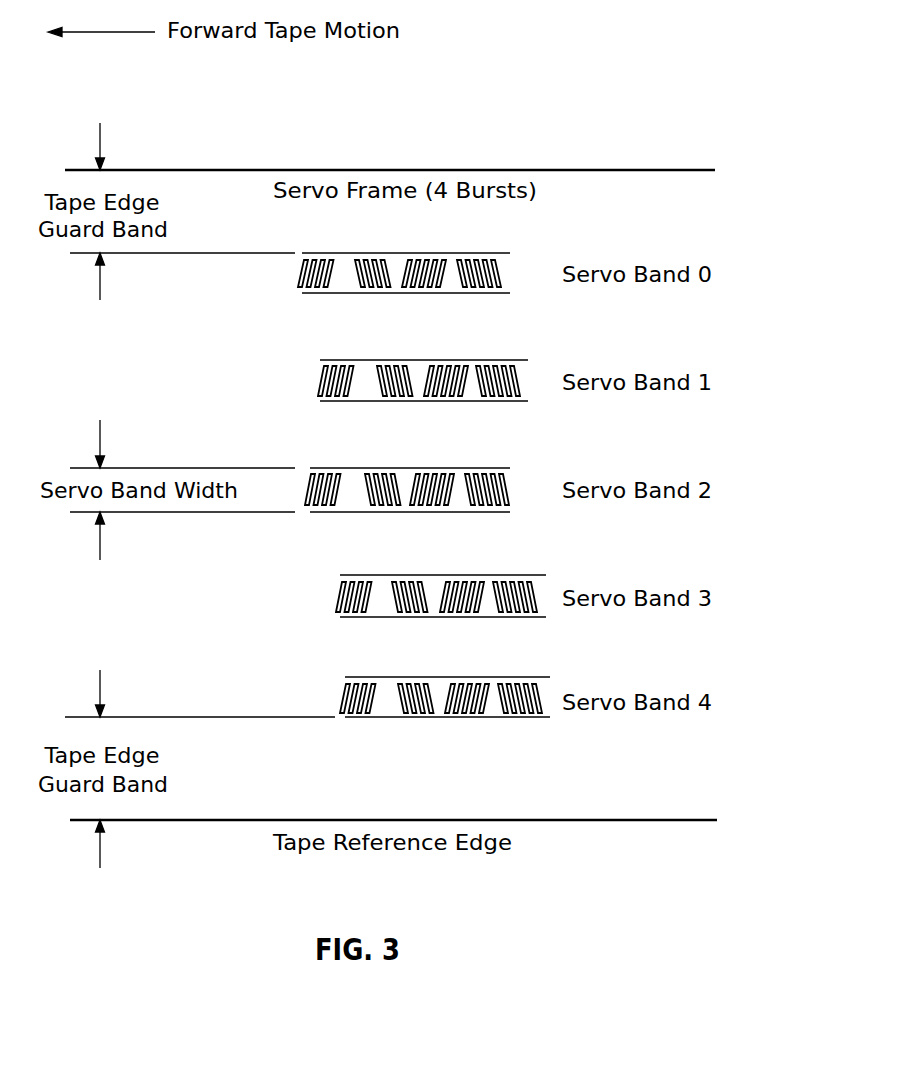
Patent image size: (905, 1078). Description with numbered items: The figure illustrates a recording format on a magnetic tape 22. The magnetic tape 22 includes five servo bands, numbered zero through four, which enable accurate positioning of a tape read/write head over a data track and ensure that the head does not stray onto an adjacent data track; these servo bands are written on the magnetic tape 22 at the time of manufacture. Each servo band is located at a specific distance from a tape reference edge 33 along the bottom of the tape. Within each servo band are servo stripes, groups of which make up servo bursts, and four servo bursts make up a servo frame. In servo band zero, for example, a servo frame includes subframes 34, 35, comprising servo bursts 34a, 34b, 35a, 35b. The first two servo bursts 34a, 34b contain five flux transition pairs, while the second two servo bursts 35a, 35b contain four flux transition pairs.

The magnetic tape 22 is at (722, 168).
The tape reference edge 33 is at (680, 820).
The subframe 34 is at (451, 282).
The servo burst 34a is at (404, 242).
The servo burst 34b is at (455, 242).
The subframe 35 is at (344, 282).
The servo burst 35a is at (300, 242).
The servo burst 35b is at (387, 242).